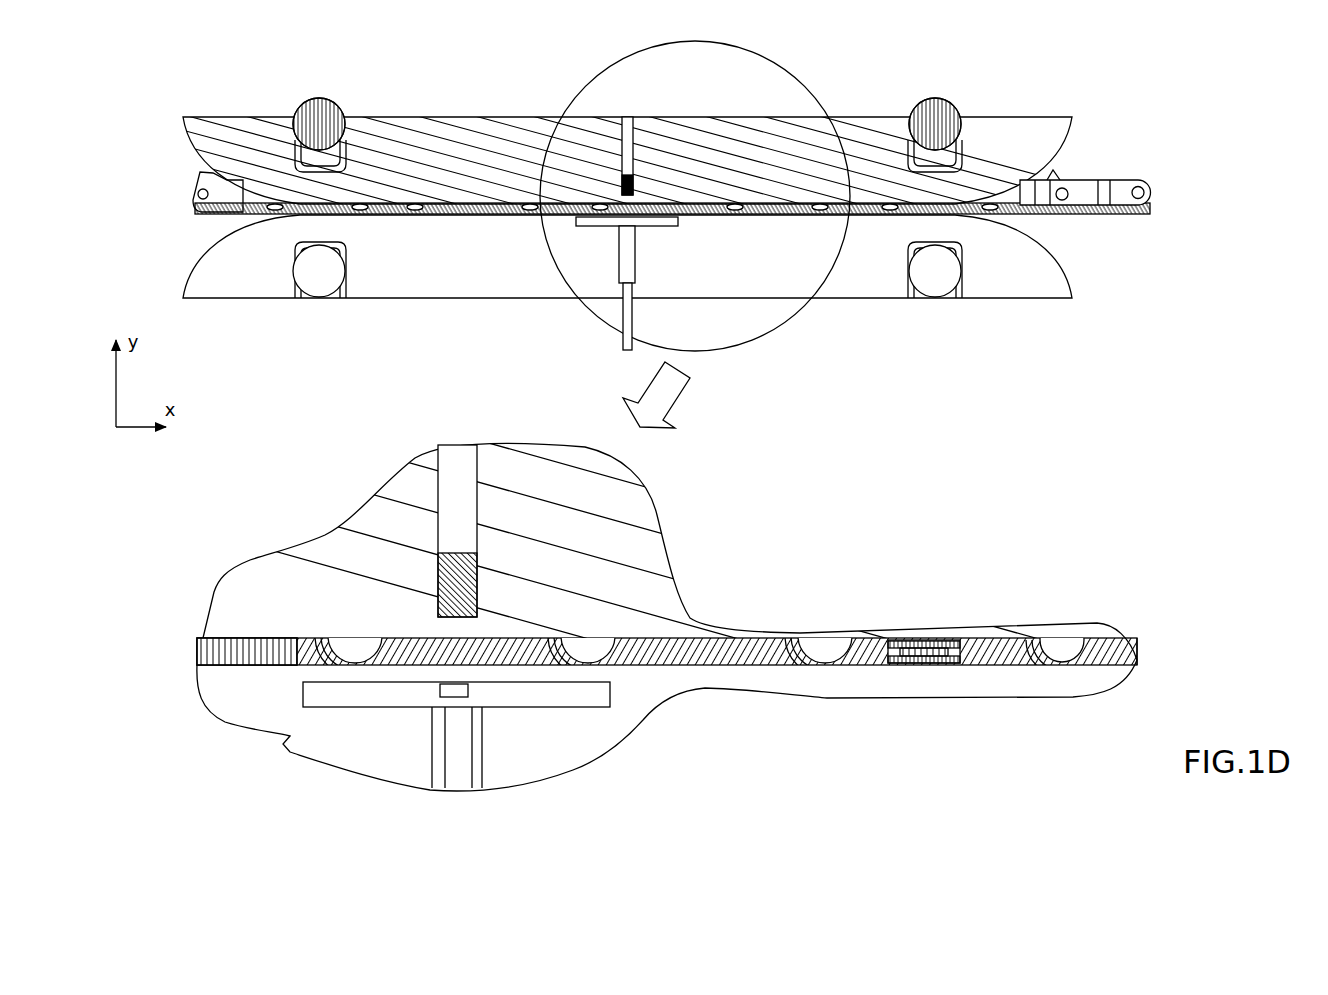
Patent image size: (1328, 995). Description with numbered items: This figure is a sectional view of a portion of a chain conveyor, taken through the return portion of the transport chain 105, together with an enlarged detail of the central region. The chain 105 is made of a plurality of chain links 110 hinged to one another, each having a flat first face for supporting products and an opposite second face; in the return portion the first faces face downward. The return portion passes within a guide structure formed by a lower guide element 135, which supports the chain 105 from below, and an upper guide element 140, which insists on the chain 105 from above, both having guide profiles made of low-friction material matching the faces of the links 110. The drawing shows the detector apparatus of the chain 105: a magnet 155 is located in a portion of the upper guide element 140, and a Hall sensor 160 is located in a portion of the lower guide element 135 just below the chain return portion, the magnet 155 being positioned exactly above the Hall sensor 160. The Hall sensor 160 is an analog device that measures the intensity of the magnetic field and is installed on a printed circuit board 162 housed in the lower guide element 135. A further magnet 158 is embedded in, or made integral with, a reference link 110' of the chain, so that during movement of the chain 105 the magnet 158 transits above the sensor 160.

The transport chain 105 is at (1145, 158).
The chain link 110 is at (672, 478).
The reference link 110' is at (1059, 693).
The lower guide element 135 is at (1030, 280).
The upper guide element 140 is at (1018, 125).
The magnet 155 is at (461, 551).
The further magnet 158 is at (947, 647).
The Hall sensor 160 is at (433, 697).
The printed circuit board 162 is at (662, 223).